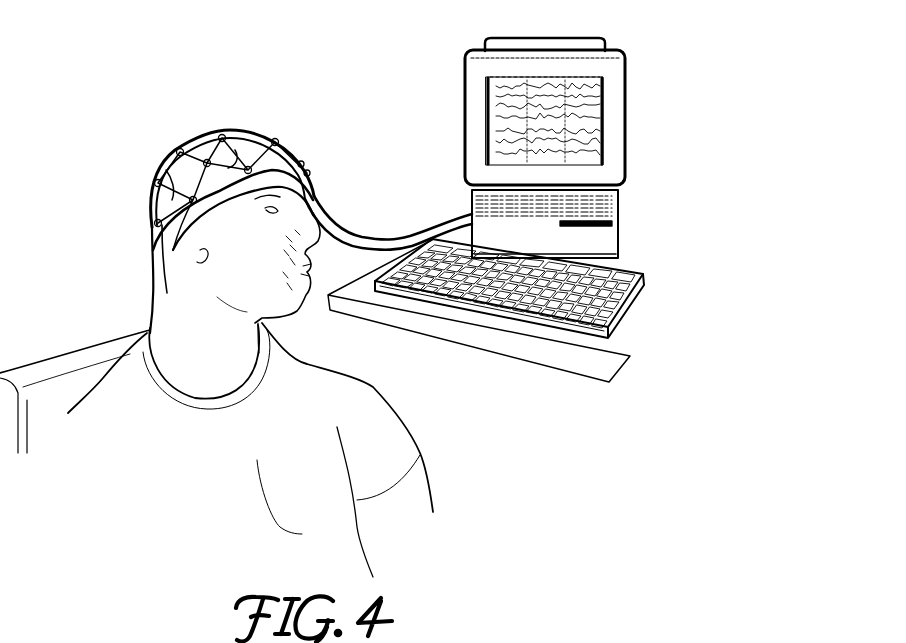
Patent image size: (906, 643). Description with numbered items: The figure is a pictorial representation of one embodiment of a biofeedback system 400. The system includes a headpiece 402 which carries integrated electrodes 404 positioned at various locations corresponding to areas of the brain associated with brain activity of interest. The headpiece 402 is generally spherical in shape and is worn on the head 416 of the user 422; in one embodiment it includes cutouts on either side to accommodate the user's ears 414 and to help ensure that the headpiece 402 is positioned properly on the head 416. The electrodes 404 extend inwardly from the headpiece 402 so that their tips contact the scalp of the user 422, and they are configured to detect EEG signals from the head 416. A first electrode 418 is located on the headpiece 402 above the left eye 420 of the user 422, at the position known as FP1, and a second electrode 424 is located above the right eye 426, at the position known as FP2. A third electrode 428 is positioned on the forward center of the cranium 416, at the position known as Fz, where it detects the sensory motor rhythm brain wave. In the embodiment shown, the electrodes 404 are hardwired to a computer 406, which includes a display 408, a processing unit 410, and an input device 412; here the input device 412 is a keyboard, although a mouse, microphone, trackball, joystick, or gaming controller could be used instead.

The biofeedback system 400 is at (231, 71).
The headpiece 402 is at (198, 132).
The electrodes 404 is at (141, 218).
The computer 406 is at (658, 49).
The display 408 is at (472, 123).
The processing unit 410 is at (617, 228).
The input device 412 is at (640, 300).
The ears 414 is at (197, 249).
The head 416 is at (263, 275).
The first electrode 418 is at (303, 162).
The left eye 420 is at (317, 215).
The user 422 is at (248, 447).
The second electrode 424 is at (250, 166).
The right eye 426 is at (264, 215).
The third electrode 428 is at (279, 141).